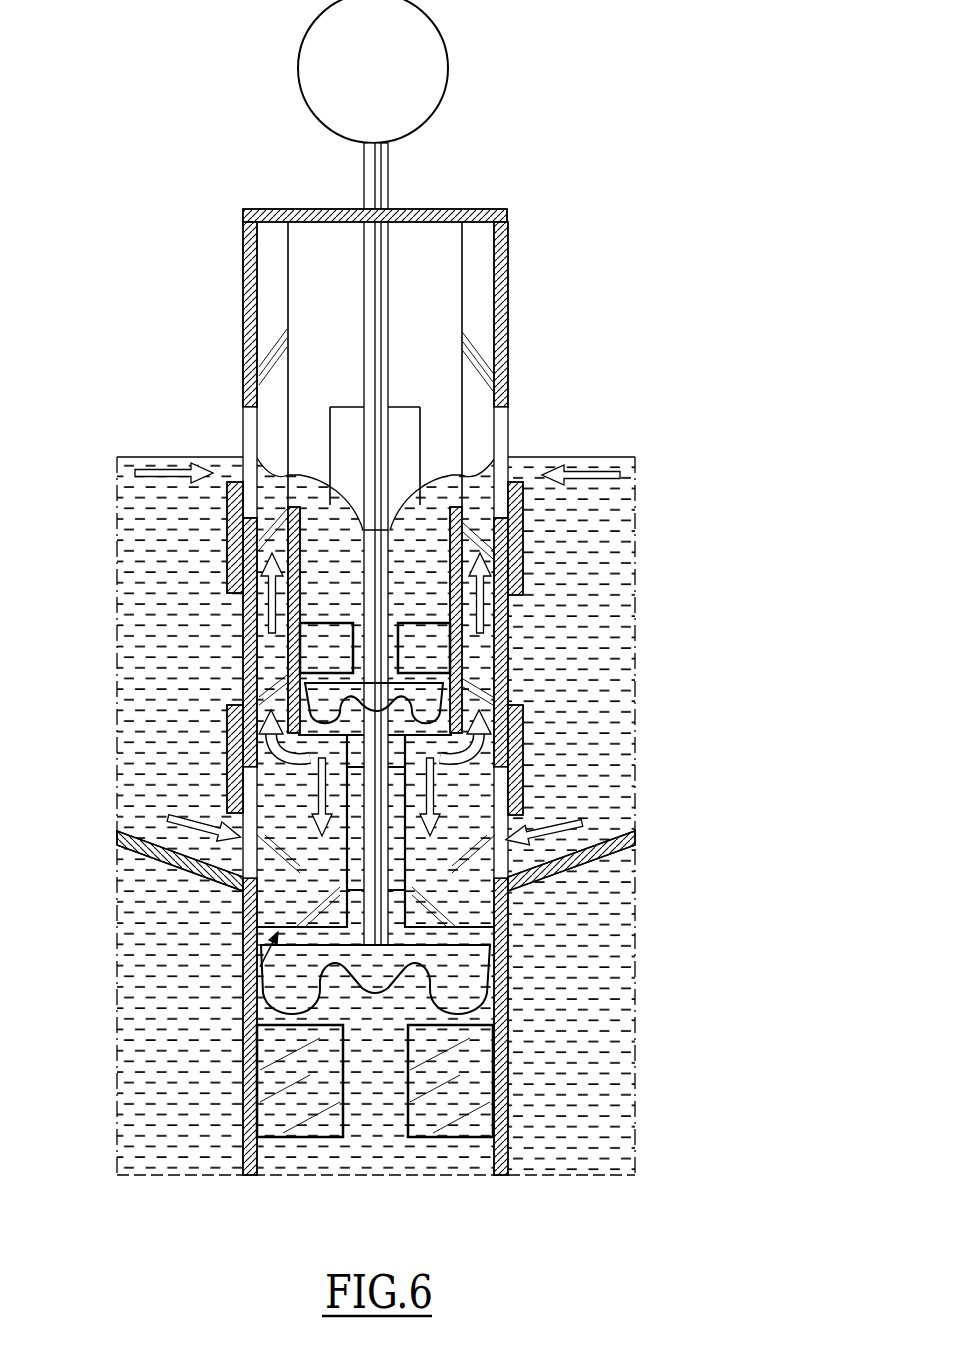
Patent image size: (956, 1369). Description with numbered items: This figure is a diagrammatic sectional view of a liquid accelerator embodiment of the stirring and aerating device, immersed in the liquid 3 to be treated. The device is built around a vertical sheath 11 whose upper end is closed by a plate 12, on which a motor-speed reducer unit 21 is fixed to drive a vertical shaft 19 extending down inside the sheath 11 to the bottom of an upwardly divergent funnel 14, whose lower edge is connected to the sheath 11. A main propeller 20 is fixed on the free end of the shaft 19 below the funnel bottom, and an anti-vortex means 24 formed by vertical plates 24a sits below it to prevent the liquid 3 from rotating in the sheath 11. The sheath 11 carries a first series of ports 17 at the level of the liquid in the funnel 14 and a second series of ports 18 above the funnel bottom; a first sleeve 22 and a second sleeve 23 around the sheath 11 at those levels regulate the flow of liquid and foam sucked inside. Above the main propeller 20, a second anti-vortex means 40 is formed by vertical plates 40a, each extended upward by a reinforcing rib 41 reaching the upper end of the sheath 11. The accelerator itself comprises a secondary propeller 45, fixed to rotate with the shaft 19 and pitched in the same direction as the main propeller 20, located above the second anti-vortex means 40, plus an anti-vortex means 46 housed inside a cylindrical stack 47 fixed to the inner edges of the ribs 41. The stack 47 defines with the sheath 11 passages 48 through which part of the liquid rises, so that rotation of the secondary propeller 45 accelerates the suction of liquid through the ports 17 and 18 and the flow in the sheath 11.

The liquid 3 is at (583, 548).
The sheath 11 is at (505, 1158).
The plate 12 is at (436, 208).
The funnel 14 is at (593, 867).
The first series of ports 17 is at (500, 440).
The second series of ports 18 is at (527, 825).
The vertical shaft 19 is at (376, 344).
The main propeller 20 is at (463, 980).
The motor-speed reducer unit 21 is at (441, 111).
The first sleeve 22 is at (235, 540).
The second sleeve 23 is at (227, 757).
The anti-vortex means 24 is at (250, 1107).
The vertical plates 24a is at (460, 1102).
The second anti-vortex means 40 is at (243, 985).
The vertical plates 40a is at (300, 877).
The reinforcing rib 41 is at (243, 382).
The secondary propeller 45 is at (467, 702).
The anti-vortex means 46 is at (450, 650).
The cylindrical stack 47 is at (293, 618).
The passages 48 is at (265, 660).